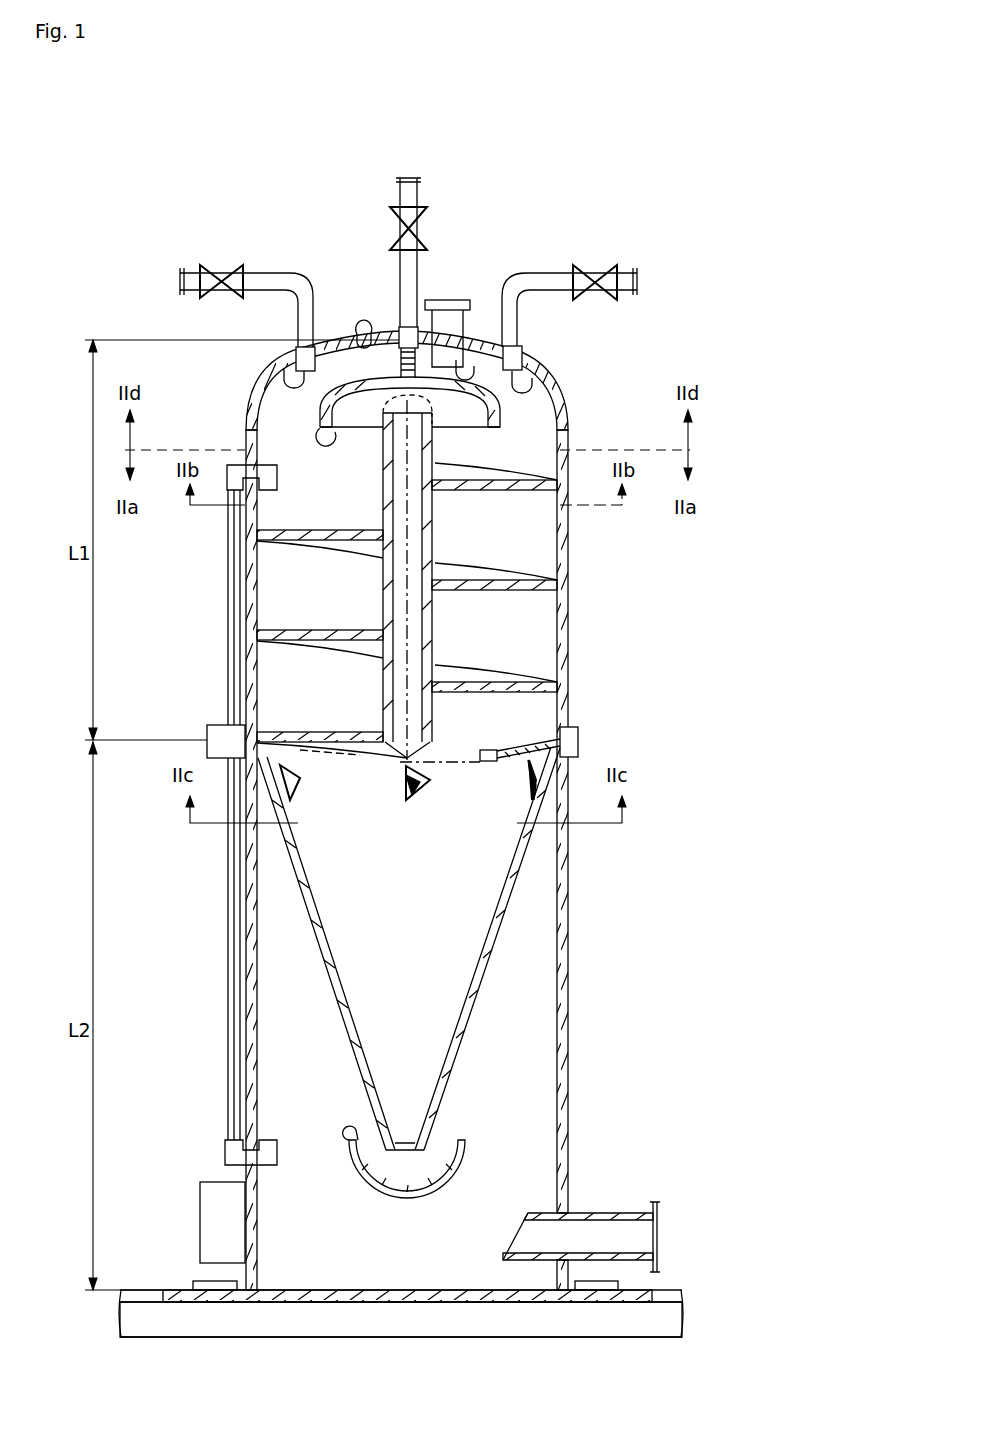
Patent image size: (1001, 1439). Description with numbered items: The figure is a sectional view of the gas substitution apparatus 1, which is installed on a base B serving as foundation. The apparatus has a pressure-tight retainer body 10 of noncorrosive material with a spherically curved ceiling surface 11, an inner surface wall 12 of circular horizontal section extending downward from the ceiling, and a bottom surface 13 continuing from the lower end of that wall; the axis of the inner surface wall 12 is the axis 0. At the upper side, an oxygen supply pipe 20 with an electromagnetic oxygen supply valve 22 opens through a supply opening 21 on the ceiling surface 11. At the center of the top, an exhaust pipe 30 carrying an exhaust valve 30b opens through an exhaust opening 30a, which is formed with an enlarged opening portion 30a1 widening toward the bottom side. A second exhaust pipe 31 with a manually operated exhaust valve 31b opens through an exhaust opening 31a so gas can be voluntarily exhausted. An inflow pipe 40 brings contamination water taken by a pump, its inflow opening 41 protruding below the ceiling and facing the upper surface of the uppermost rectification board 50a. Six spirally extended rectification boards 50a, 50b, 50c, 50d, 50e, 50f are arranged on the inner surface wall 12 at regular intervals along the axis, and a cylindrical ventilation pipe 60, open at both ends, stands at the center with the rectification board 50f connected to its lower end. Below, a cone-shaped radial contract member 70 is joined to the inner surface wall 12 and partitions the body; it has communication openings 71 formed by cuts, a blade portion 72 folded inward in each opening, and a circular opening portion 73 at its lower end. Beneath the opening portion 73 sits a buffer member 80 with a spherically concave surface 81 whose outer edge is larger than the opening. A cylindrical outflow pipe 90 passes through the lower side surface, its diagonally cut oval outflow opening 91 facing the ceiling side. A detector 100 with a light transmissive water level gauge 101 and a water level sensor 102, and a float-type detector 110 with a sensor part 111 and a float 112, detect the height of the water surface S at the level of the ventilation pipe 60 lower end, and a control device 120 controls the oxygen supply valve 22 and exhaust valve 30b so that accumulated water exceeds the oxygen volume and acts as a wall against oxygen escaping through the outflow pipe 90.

The gas substitution apparatus 1 is at (740, 180).
The retainer body 10 is at (600, 392).
The ceiling surface 11 is at (356, 338).
The inner surface wall 12 is at (256, 530).
The bottom surface 13 is at (412, 1290).
The oxygen supply pipe 20 is at (258, 225).
The supply opening 21 is at (298, 360).
The oxygen supply valve 22 is at (222, 266).
The exhaust pipe 30 is at (462, 168).
The exhaust opening 30a is at (376, 430).
The enlarged opening portion 30a1 is at (338, 436).
The exhaust valve 30b is at (418, 222).
The exhaust pipe 31 is at (570, 235).
The exhaust opening 31a is at (522, 362).
The exhaust valve 31b is at (597, 272).
The inflow pipe 40 is at (455, 275).
The inflow opening 41 is at (455, 357).
The rectification board 50a is at (486, 483).
The rectification board 50b is at (332, 550).
The rectification board 50c is at (486, 585).
The rectification board 50d is at (330, 650).
The rectification board 50e is at (486, 683).
The rectification board 50f is at (368, 742).
The ventilation pipe 60 is at (405, 550).
The radial contract member 70 is at (495, 1000).
The communication opening 71 is at (428, 792).
The blade portion 72 is at (296, 790).
The opening portion 73 is at (415, 1157).
The buffer member 80 is at (430, 1203).
The concave surface 81 is at (342, 1138).
The outflow pipe 90 is at (605, 1185).
The outflow opening 91 is at (515, 1213).
The detector 100 is at (210, 695).
The water level gauge 101 is at (232, 910).
The water level sensor 102 is at (226, 736).
The detector 110 is at (590, 705).
The sensor part 111 is at (578, 738).
The float 112 is at (490, 750).
The control device 120 is at (212, 1225).
The axis 0 is at (440, 410).
The water surface S is at (436, 762).
The base B is at (133, 1315).